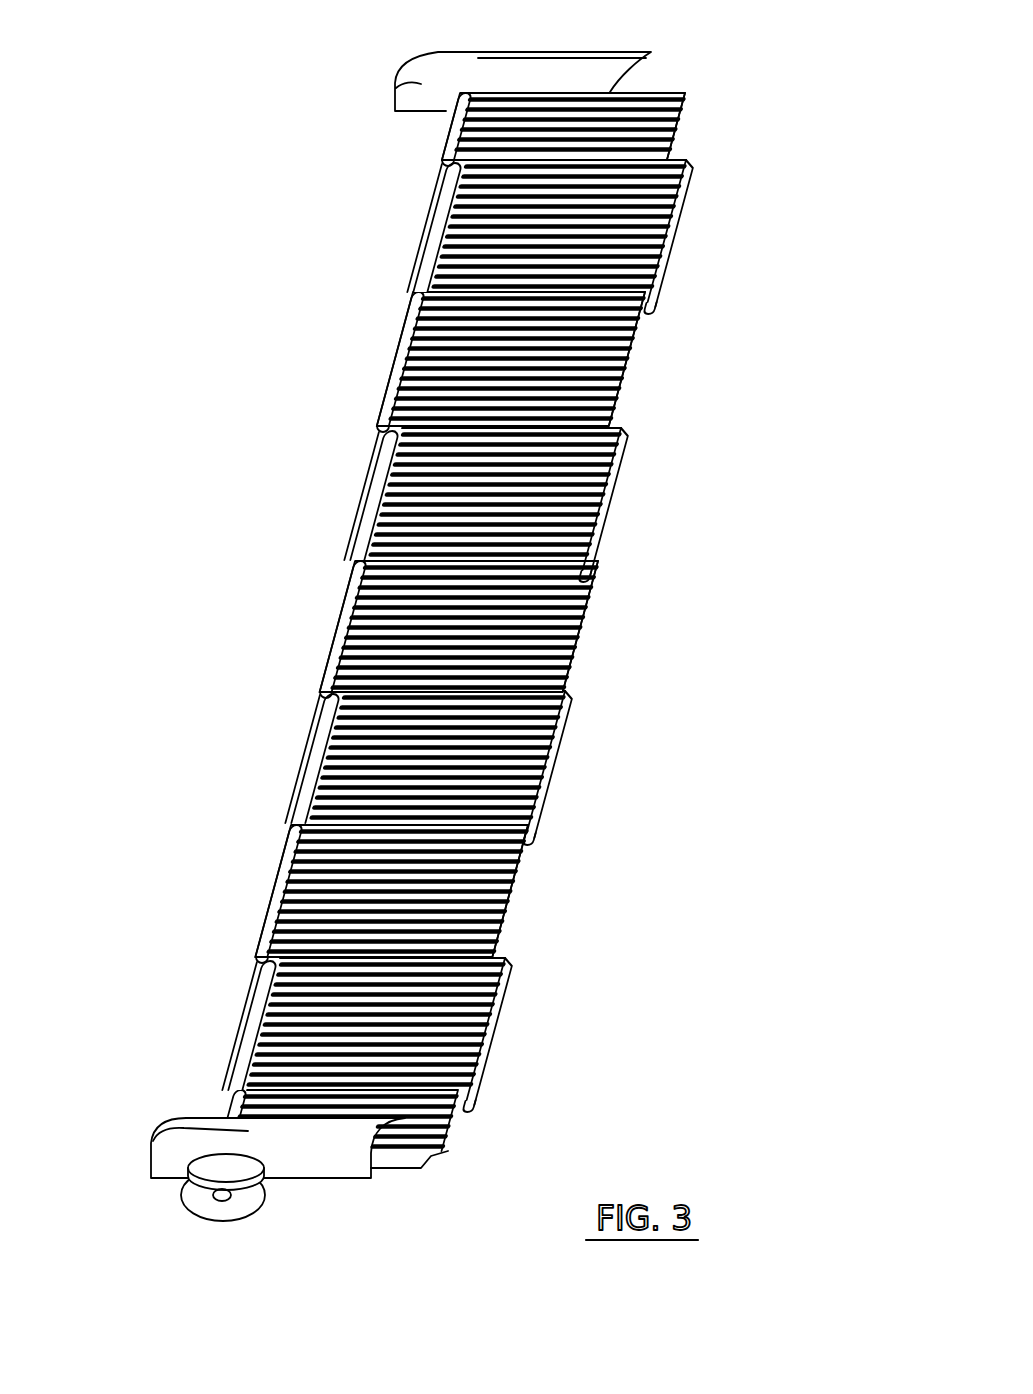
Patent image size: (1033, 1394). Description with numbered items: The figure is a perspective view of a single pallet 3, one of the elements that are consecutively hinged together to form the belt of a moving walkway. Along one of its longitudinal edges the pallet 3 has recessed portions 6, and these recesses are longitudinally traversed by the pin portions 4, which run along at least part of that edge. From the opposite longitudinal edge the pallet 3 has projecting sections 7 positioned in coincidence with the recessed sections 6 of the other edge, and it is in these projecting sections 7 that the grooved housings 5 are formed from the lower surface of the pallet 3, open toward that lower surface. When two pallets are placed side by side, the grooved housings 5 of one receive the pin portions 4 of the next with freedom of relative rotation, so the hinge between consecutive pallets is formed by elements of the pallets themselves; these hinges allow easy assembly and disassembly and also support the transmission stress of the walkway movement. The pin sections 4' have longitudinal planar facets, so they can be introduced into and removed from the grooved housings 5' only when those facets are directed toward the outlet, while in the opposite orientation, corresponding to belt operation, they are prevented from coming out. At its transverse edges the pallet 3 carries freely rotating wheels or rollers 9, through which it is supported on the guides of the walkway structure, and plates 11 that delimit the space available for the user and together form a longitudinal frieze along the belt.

The pallet 3 is at (706, 97).
The pin portions 4 is at (267, 627).
The pin sections 4' is at (269, 626).
The grooved housing 5 is at (601, 726).
The grooved housings 5' is at (606, 725).
The recessed portions 6 is at (381, 177).
The projecting sections 7 is at (666, 229).
The rollers 9 is at (470, 42).
The plates 11 is at (410, 77).